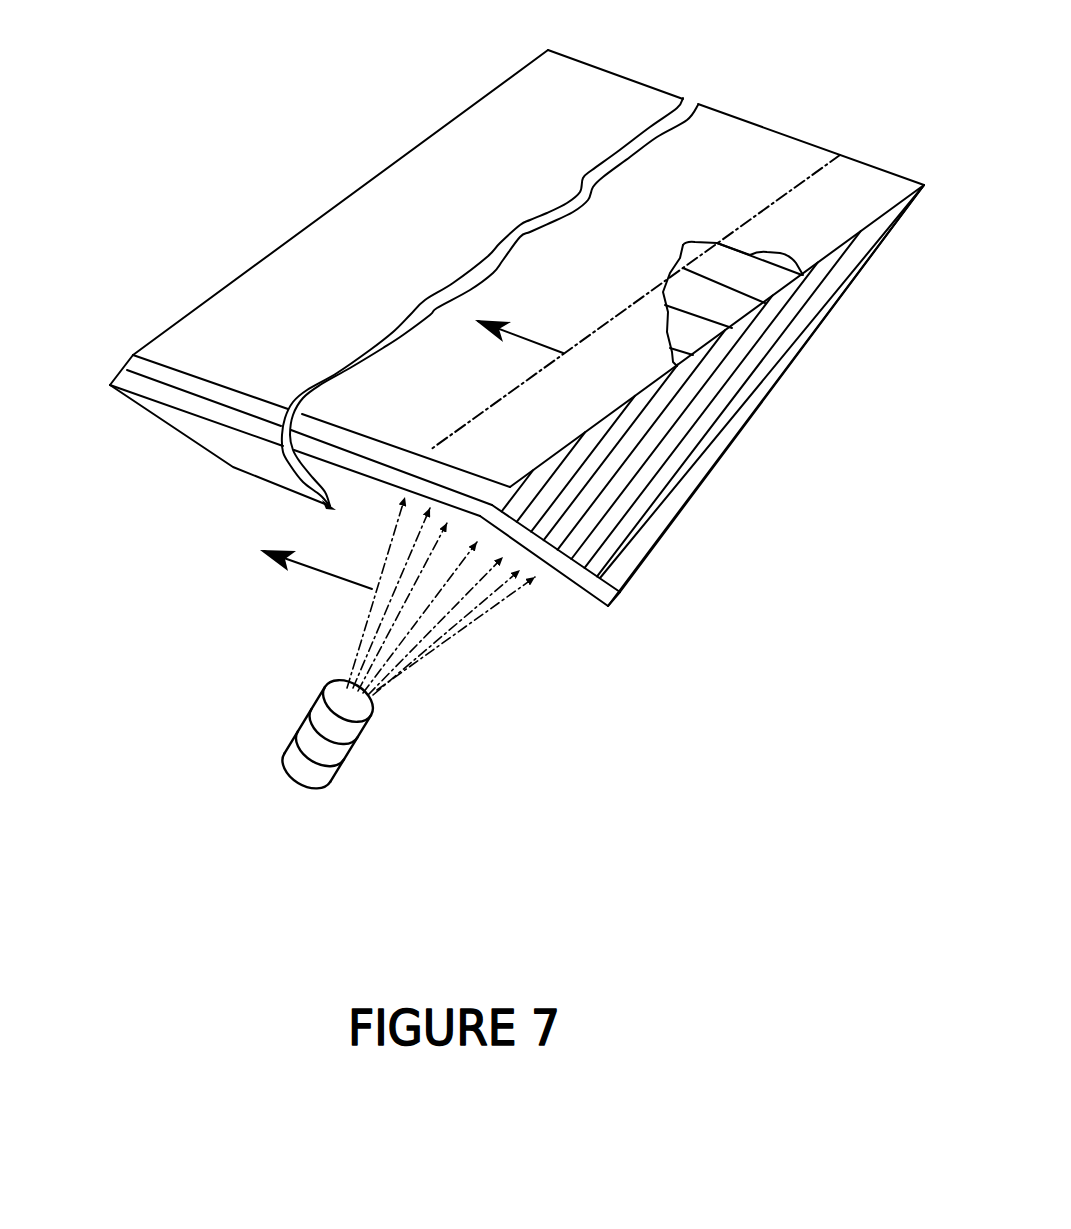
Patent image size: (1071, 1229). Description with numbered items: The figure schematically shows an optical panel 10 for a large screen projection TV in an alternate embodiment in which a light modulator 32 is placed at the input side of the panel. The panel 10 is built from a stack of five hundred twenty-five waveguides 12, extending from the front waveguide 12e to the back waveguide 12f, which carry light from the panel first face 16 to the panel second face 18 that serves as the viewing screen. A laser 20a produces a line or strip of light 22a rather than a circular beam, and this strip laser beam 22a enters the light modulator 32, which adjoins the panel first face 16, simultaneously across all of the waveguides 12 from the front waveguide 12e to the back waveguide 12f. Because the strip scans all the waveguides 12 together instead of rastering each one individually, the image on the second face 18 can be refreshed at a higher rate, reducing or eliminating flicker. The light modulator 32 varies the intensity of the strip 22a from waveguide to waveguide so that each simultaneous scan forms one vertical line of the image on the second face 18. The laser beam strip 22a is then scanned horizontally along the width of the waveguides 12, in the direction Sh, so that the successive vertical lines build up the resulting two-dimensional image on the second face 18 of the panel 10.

The panel 10 is at (528, 328).
The waveguides 12 is at (737, 408).
The front waveguide 12e is at (268, 418).
The back waveguide 12f is at (668, 528).
The panel first face 16 is at (612, 581).
The panel second face 18 is at (528, 301).
The laser 20a is at (350, 753).
The strip laser beam 22a is at (448, 525).
The light modulator 32 is at (563, 607).
The horizontal scan direction Sh is at (299, 585).